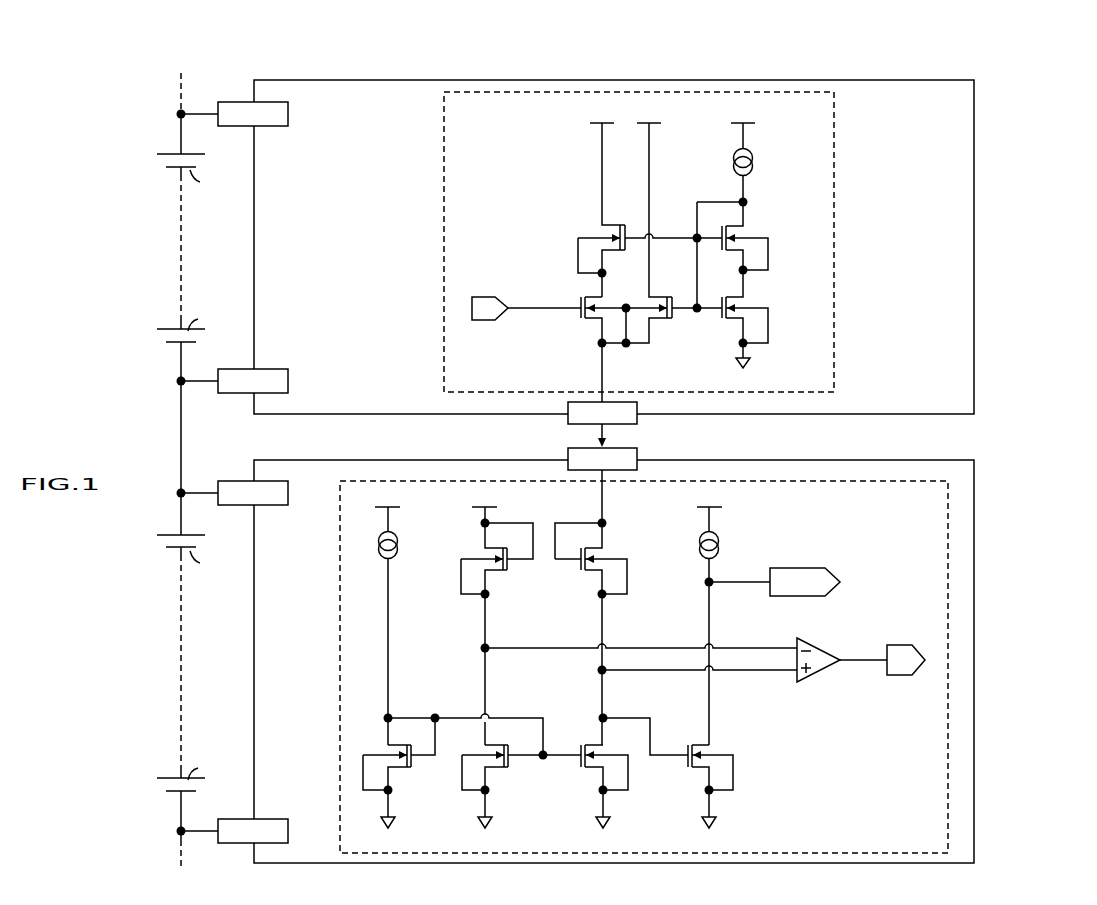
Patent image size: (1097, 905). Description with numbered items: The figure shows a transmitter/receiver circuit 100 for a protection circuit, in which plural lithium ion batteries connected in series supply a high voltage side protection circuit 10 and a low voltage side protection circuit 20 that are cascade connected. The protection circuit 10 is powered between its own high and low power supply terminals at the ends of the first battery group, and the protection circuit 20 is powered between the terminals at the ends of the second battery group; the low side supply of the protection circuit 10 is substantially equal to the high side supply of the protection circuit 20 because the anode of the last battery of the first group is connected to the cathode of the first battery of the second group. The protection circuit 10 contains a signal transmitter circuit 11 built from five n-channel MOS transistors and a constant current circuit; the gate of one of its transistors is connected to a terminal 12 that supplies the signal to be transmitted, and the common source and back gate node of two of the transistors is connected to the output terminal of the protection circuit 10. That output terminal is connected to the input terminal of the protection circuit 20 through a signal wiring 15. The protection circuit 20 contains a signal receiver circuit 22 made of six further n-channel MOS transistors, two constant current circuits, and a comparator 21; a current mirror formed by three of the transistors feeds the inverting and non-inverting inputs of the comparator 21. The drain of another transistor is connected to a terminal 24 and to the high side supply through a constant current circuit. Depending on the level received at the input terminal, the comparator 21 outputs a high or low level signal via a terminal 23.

The transmitter/receiver circuit 100 is at (1085, 104).
The high voltage side protection circuit 10 is at (975, 248).
The signal transmitter circuit 11 is at (444, 152).
The terminal 12 is at (488, 296).
The signal wiring 15 is at (608, 434).
The low voltage side protection circuit 20 is at (975, 660).
The comparator 21 is at (826, 666).
The signal receiver circuit 22 is at (340, 543).
The terminal 23 is at (905, 658).
The terminal 24 is at (803, 573).